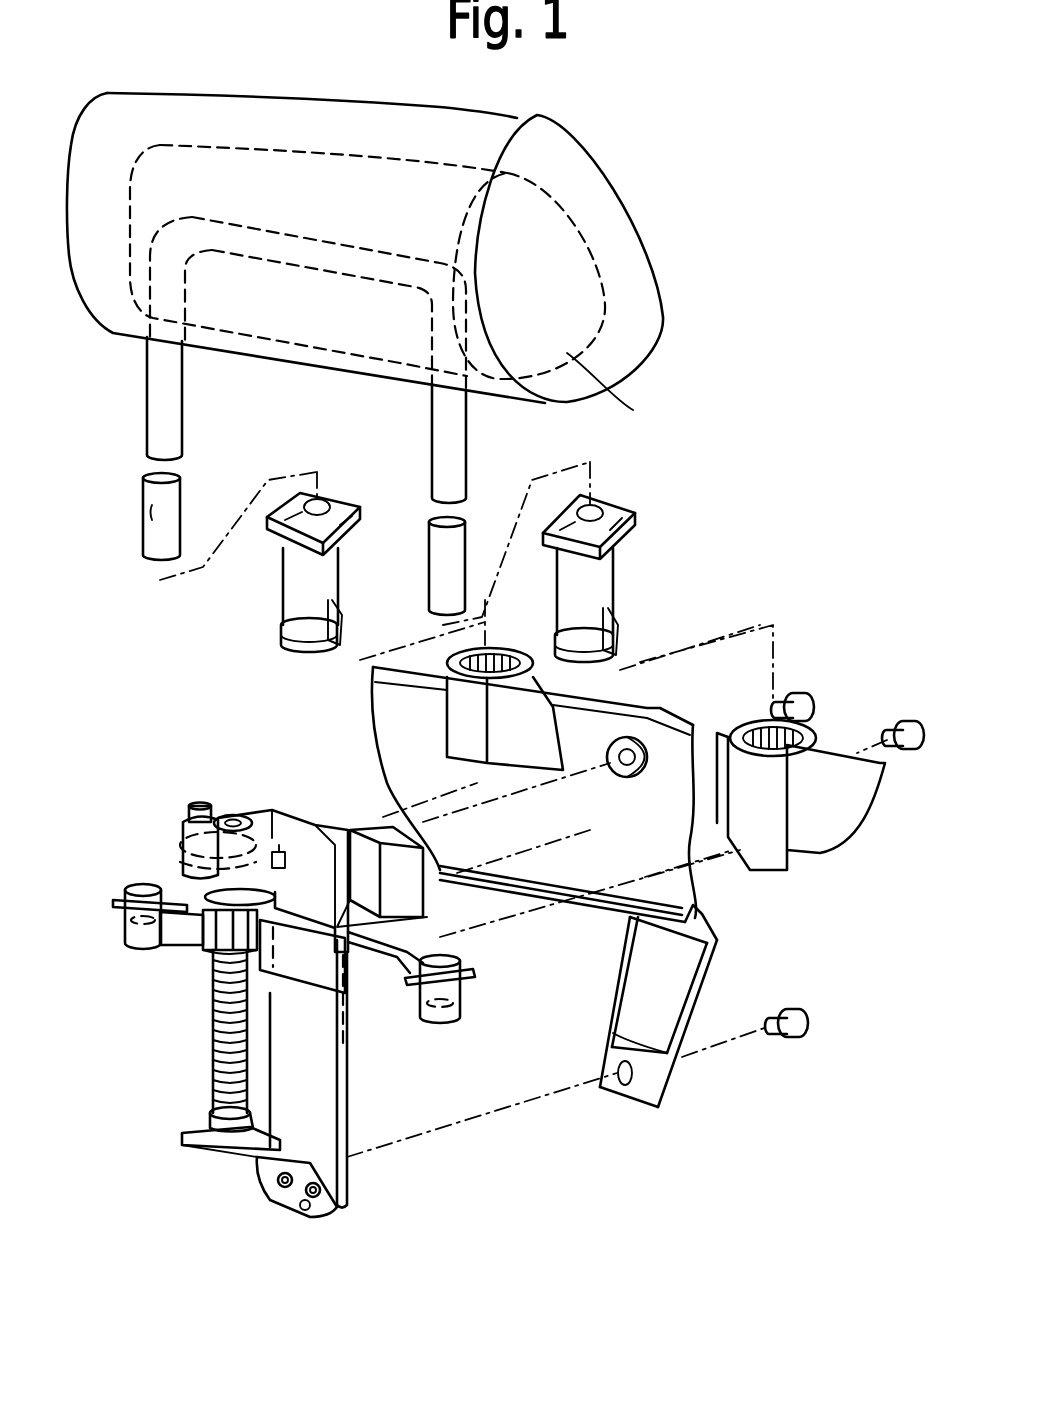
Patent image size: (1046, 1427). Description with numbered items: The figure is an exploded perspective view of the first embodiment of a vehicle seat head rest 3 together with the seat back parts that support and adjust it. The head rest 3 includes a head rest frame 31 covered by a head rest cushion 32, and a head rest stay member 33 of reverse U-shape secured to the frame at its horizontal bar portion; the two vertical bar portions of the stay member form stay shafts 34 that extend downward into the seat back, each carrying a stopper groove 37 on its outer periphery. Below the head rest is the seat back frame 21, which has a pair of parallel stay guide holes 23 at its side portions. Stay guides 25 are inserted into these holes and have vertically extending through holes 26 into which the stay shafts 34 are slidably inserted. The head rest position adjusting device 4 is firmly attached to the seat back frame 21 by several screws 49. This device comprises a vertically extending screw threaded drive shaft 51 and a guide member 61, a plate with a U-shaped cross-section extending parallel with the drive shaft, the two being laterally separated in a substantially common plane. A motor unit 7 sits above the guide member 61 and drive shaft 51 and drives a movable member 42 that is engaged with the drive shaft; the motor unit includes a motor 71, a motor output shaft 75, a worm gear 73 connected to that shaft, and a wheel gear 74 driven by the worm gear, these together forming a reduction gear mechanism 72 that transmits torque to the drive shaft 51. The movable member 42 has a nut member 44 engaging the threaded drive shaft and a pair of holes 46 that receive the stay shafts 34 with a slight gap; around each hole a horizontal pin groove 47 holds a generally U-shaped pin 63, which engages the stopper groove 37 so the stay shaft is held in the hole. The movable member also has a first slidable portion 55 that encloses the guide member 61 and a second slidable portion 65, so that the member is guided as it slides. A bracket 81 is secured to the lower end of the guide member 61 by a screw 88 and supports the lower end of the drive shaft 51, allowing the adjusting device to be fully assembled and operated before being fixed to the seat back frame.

The head rest 3 is at (677, 307).
The head rest frame 31 is at (633, 410).
The head rest cushion 32 is at (633, 350).
The head rest stay member 33 is at (270, 278).
The stay shafts 34 is at (172, 427).
The stopper groove 37 is at (180, 512).
The through holes 26 is at (280, 530).
The stay guides 25 is at (290, 603).
The seat back frame 21 is at (558, 872).
The stay guide holes 23 is at (458, 720).
The screws 49 is at (808, 693).
The motor unit 7 is at (256, 812).
The motor 71 is at (322, 862).
The reduction gear mechanism 72 is at (183, 858).
The worm gear 73 is at (285, 860).
The wheel gear 74 is at (183, 838).
The motor output shaft 75 is at (305, 862).
The holes 46 is at (175, 895).
The horizontal pin groove 47 is at (440, 987).
The U-shaped pins 63 is at (120, 908).
The movable member 42 is at (180, 940).
The nut member 44 is at (207, 945).
The drive shaft 51 is at (210, 1078).
The head rest position adjusting device 4 is at (190, 1047).
The first slidable portion 55 is at (300, 993).
The guide member 61 is at (318, 1123).
The second slidable portion 65 is at (346, 1030).
The bracket 81 is at (270, 1180).
The screw 88 is at (288, 1200).